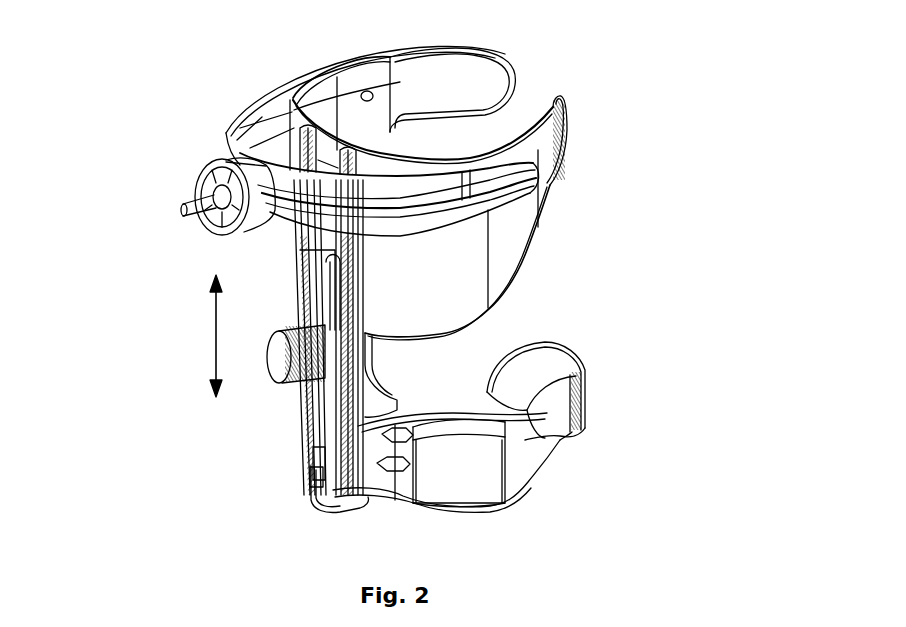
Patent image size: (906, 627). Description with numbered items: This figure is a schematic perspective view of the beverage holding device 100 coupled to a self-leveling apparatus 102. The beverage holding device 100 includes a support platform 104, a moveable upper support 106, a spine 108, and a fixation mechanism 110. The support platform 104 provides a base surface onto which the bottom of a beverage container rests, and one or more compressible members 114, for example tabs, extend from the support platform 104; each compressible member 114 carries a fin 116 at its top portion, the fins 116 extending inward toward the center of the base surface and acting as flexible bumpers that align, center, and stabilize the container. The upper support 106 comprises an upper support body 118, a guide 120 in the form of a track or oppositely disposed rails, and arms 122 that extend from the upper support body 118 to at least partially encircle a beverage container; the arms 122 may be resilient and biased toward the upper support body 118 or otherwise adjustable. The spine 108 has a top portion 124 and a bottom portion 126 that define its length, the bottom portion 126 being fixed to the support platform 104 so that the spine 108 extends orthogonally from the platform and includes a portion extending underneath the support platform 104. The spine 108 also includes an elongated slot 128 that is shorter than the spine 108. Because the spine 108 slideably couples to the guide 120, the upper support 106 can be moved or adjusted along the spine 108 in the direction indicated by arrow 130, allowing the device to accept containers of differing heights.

The beverage holding device 100 is at (597, 79).
The self-leveling apparatus 102 is at (194, 109).
The support platform 104 is at (534, 463).
The moveable upper support 106 is at (527, 250).
The spine 108 is at (320, 462).
The fixation mechanism 110 is at (270, 378).
The compressible member 114 is at (685, 425).
The fin 116 is at (536, 391).
The upper support body 118 is at (414, 259).
The guide 120 is at (360, 287).
The arm 122 is at (512, 72).
The top portion 124 is at (298, 246).
The bottom portion 126 is at (327, 502).
The elongated slot 128 is at (320, 426).
The arrow 130 is at (216, 325).